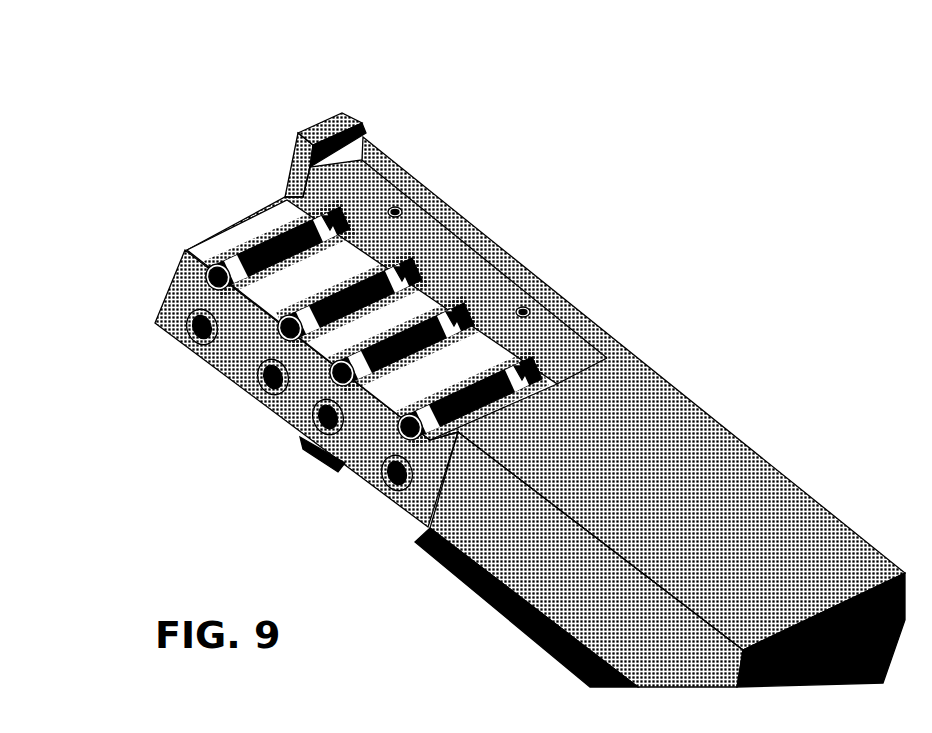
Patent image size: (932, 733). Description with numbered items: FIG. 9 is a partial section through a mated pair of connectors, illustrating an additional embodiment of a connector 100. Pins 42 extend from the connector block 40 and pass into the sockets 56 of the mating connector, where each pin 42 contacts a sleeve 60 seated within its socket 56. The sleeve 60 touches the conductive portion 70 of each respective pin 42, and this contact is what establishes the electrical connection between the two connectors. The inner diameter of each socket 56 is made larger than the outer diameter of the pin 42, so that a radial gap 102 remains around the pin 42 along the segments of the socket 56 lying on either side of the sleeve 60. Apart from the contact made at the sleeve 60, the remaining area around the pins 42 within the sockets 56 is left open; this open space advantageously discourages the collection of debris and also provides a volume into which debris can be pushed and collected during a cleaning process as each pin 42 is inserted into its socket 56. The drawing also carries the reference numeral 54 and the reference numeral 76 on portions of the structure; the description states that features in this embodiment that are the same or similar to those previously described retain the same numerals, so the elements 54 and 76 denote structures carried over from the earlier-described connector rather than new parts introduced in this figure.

The connector 100 is at (476, 370).
The connector block 40 is at (437, 282).
The pins 42 is at (332, 218).
The mounting block 54 is at (339, 339).
The sockets 56 is at (255, 397).
The sleeves 60 is at (393, 377).
The conductive portion 70 is at (240, 204).
The roller end band 76 is at (243, 270).
The radial gap 102 is at (313, 417).